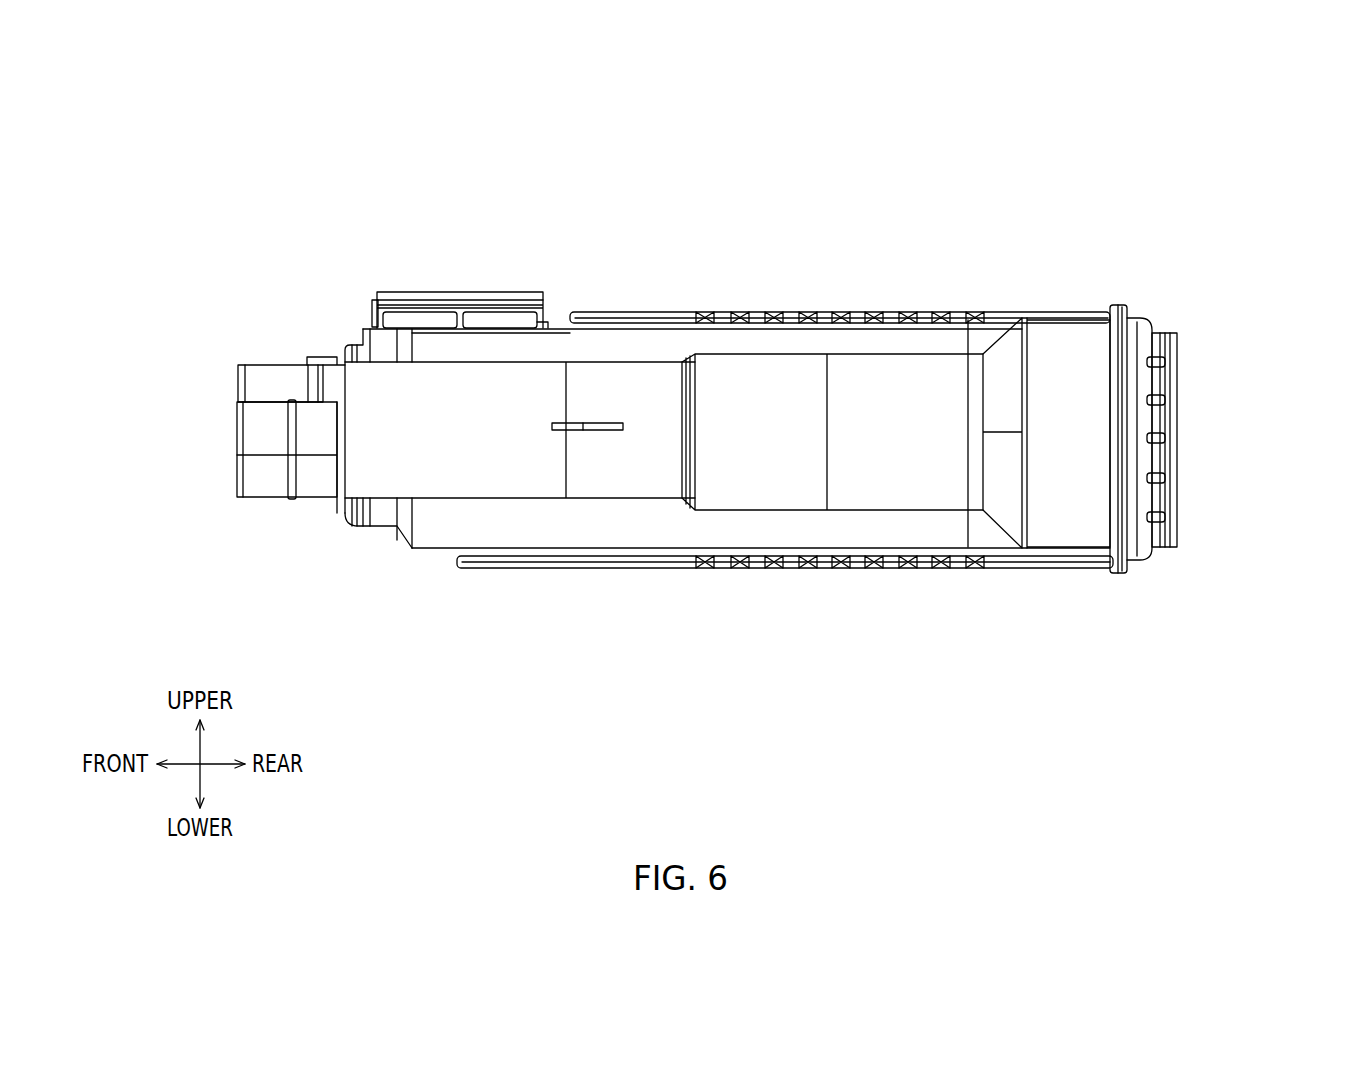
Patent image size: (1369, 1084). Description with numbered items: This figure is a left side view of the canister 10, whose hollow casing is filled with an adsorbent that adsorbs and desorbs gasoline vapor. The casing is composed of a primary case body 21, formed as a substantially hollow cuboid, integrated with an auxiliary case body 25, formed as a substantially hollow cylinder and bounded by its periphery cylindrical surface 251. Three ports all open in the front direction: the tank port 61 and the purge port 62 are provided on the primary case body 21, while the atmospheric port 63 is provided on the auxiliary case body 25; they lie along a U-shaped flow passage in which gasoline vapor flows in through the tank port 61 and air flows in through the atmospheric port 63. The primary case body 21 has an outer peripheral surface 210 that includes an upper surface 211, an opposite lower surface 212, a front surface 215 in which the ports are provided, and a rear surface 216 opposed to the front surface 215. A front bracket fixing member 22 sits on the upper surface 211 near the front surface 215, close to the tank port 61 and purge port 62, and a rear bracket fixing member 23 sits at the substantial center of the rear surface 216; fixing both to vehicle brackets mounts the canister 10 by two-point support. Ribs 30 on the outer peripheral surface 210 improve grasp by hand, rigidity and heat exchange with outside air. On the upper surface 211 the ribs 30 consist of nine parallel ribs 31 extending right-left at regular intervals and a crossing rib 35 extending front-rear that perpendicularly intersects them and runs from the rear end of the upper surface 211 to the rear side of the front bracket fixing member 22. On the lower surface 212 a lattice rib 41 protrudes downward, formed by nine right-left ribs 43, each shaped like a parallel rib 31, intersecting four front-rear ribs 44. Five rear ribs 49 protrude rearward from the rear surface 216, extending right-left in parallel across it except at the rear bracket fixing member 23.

The canister 10 is at (358, 178).
The primary case body 21 is at (1063, 305).
The front bracket fixing member 22 is at (463, 292).
The rear bracket fixing member 23 is at (1178, 462).
The auxiliary case body 25 is at (592, 470).
The ribs 30 is at (785, 441).
The parallel ribs 31 is at (774, 312).
The crossing rib 35 is at (615, 312).
The lattice rib 41 is at (785, 629).
The right-left ribs 43 is at (768, 570).
The front-rear ribs 44 is at (507, 568).
The rear ribs 49 is at (1175, 361).
The tank port 61 is at (235, 475).
The purge port 62 is at (235, 390).
The atmospheric port 63 is at (235, 428).
The outer peripheral surface 210 is at (822, 443).
The upper surface 211 is at (653, 312).
The lower surface 212 is at (640, 553).
The front surface 215 is at (338, 507).
The rear surface 216 is at (1178, 345).
The periphery cylindrical surface 251 is at (780, 480).